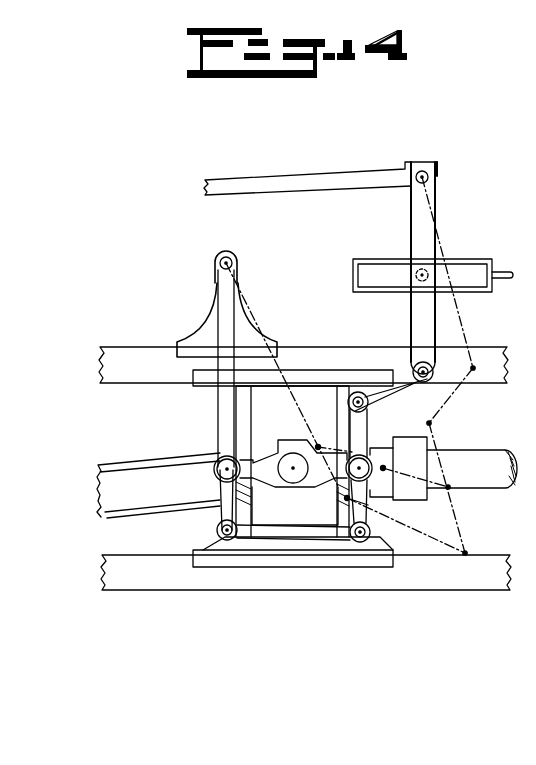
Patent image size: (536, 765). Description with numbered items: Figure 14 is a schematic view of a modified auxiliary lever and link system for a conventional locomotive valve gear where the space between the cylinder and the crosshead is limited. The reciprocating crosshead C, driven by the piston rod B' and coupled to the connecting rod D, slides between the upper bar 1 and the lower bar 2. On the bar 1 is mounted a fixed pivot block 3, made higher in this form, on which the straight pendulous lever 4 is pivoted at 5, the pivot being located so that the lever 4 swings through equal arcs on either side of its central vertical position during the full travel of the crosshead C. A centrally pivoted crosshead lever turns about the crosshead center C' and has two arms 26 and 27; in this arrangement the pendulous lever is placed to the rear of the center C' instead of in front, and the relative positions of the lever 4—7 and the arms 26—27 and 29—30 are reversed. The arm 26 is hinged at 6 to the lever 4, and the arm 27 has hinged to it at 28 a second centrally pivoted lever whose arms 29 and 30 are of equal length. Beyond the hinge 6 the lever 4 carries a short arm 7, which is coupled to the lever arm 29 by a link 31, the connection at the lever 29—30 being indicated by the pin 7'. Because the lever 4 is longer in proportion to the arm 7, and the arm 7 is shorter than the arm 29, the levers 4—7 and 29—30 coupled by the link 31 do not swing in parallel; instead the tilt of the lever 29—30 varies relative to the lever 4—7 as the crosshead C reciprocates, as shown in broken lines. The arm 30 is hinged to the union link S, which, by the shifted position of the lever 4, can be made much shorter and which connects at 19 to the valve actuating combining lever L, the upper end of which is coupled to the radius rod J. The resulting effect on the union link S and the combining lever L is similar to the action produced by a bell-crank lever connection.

The bar 1 is at (100, 365).
The bar 2 is at (152, 584).
The pivot block 3 is at (205, 318).
The pendulous lever 4 is at (217, 416).
The pivot 5 is at (219, 264).
The hinge point 6 is at (214, 470).
The short arm 7 is at (271, 511).
The pin 7' is at (340, 504).
The pin 19 is at (418, 362).
The crosshead lever arm 26 is at (258, 475).
The crosshead lever arm 27 is at (319, 445).
The hinge 28 is at (383, 471).
The lever arm 29 is at (394, 513).
The lever arm 30 is at (368, 428).
The link 31 is at (320, 534).
The piston rod B' is at (462, 480).
The crosshead C is at (293, 581).
The crosshead center C' is at (295, 489).
The connecting rod D is at (132, 472).
The radius rod J is at (300, 179).
The combining lever L is at (410, 229).
The union link S is at (398, 391).